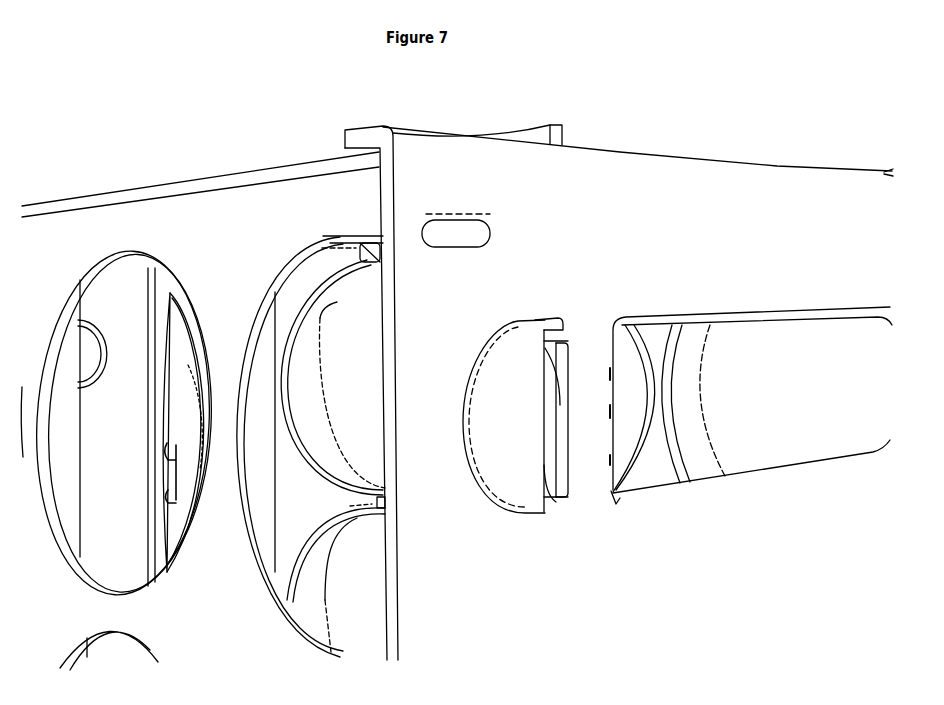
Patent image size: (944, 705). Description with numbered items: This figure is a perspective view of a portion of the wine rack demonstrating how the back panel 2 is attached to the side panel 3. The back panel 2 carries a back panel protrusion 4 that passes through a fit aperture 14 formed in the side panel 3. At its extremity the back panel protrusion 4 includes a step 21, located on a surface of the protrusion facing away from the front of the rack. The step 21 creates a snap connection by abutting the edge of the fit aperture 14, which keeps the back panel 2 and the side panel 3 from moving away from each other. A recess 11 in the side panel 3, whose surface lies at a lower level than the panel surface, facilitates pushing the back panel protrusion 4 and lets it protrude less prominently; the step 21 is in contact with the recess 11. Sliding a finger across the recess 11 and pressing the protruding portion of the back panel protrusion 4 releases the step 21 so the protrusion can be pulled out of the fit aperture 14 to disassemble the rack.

The back panel 2 is at (118, 218).
The side panel 3 is at (781, 205).
The back panel protrusion 4 is at (560, 397).
The recess 11 is at (498, 413).
The fit aperture 14 is at (559, 320).
The step 21 is at (552, 453).